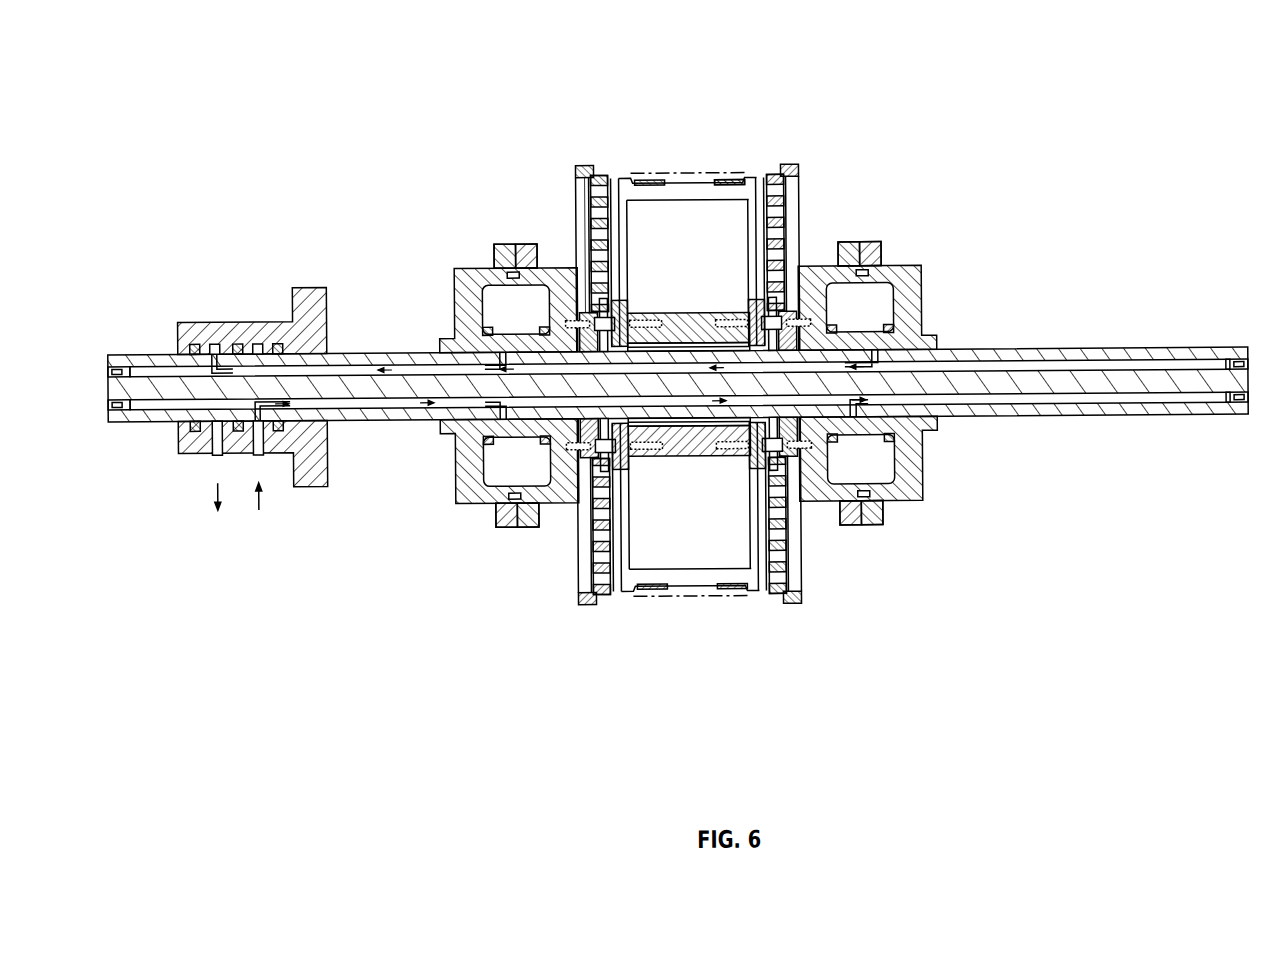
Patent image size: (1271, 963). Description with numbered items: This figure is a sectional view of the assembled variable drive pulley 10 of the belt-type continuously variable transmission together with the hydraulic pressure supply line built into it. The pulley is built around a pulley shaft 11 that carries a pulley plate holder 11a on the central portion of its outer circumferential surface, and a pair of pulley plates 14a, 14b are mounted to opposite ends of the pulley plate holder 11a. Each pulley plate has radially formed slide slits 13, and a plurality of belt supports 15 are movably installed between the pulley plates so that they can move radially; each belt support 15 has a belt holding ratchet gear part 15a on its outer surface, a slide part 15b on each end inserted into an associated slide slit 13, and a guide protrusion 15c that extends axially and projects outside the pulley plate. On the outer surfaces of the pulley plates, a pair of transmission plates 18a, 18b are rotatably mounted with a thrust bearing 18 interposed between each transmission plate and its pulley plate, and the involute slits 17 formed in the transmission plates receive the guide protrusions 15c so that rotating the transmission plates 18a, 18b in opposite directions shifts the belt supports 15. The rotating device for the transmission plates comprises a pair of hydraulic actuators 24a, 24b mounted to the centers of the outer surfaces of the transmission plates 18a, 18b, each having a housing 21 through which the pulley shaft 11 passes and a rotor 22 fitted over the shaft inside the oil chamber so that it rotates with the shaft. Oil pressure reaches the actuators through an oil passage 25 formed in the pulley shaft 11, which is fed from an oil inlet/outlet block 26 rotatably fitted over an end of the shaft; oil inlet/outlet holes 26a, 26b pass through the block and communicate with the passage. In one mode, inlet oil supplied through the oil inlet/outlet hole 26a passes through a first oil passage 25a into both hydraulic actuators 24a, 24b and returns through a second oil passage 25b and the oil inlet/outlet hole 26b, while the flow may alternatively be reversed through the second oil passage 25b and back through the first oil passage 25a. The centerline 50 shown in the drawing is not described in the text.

The variable drive pulley 10 is at (287, 134).
The pulley shaft 11 is at (367, 353).
The pulley plate holder 11a is at (693, 447).
The slide slits 13 is at (590, 262).
The pulley plate 14a is at (541, 347).
The pulley plate 14b is at (845, 346).
The belt supports 15 is at (671, 368).
The belt holding ratchet gear part 15a is at (727, 180).
The slide part 15b is at (622, 192).
The guide protrusion 15c is at (588, 222).
The involute slits 17 is at (787, 244).
The thrust bearing 18 is at (617, 477).
The transmission plate 18a is at (593, 191).
The transmission plate 18b is at (780, 213).
The housing 21 is at (470, 266).
The rotor 22 is at (433, 419).
The hydraulic actuator 24a is at (513, 526).
The hydraulic actuator 24b is at (872, 526).
The oil passage 25 is at (306, 533).
The first oil passage 25a is at (378, 403).
The second oil passage 25b is at (350, 368).
The oil inlet/outlet block 26 is at (235, 375).
The oil inlet/outlet hole 26a is at (258, 450).
The oil inlet/outlet hole 26b is at (217, 450).
The center axis line 50 is at (700, 173).